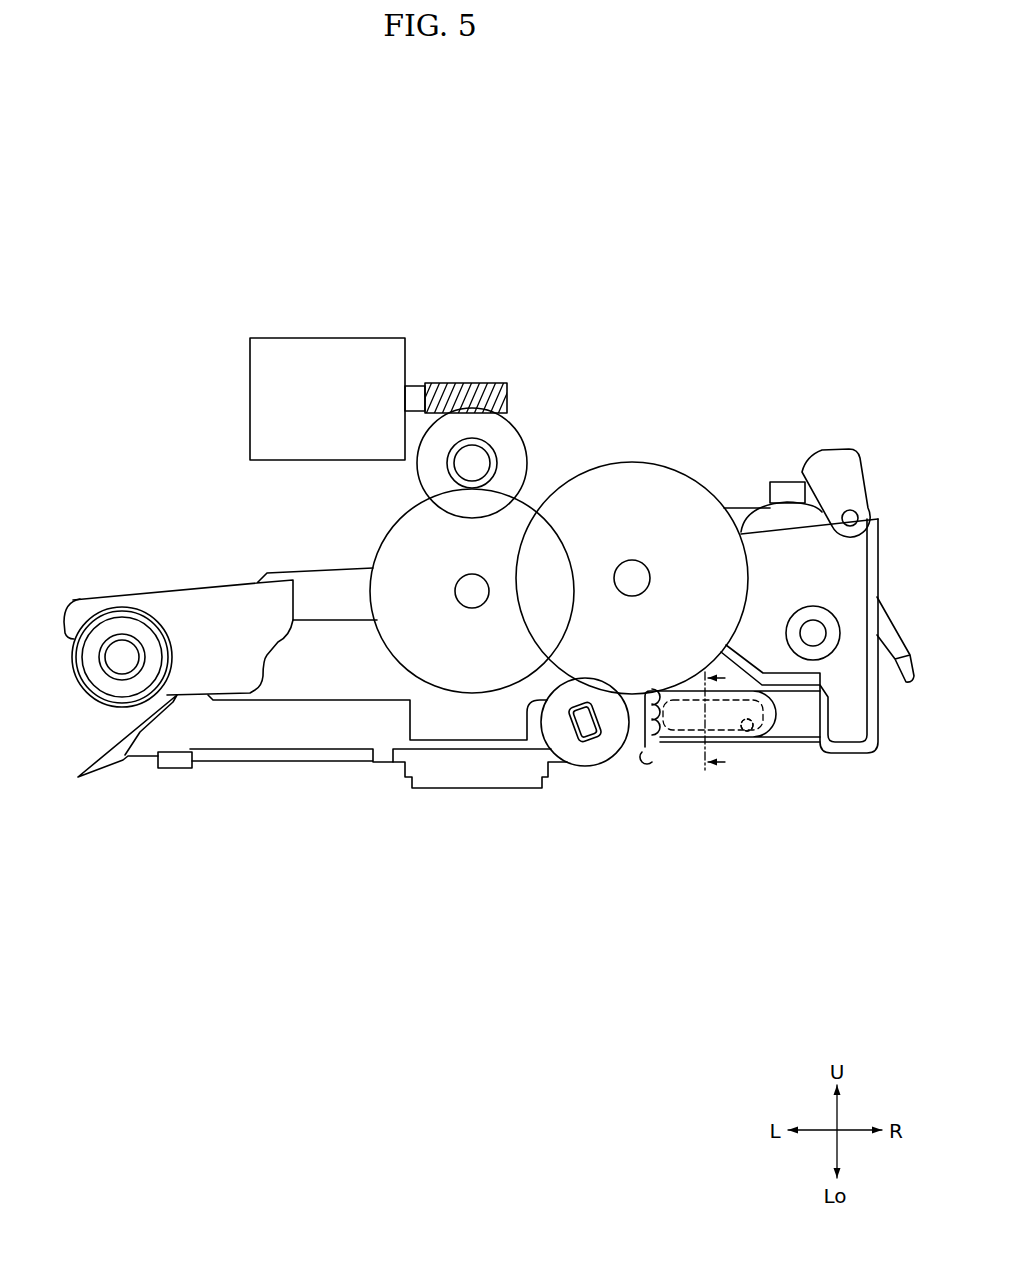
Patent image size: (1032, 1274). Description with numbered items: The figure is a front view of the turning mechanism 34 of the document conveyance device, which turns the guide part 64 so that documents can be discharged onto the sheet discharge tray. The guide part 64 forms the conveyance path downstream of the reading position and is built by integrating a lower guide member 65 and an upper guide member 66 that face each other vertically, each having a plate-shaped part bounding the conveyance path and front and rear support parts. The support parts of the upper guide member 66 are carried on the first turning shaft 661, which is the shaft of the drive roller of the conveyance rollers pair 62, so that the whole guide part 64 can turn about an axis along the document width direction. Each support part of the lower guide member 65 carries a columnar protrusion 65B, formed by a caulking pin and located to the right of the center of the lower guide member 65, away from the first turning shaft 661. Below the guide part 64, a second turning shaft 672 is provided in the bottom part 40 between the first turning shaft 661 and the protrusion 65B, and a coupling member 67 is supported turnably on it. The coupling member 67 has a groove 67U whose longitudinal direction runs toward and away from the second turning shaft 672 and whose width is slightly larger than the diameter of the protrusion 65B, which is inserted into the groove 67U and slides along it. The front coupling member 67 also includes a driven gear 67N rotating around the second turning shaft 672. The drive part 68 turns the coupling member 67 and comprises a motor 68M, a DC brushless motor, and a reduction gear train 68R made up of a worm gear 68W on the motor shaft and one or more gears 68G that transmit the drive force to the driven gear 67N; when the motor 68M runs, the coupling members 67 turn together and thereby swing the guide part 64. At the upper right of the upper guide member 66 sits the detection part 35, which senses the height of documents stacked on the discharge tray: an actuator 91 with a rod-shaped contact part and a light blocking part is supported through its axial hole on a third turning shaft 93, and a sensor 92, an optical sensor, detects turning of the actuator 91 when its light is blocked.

The turning mechanism 34 is at (800, 194).
The detection part 35 is at (848, 388).
The bottom part 40 is at (362, 763).
The conveyance rollers pair 62 is at (97, 698).
The guide part 64 is at (187, 582).
The lower guide member 65 is at (298, 682).
The protrusion 65B is at (663, 703).
The upper guide member 66 is at (225, 585).
The first turning shaft 661 is at (103, 667).
The coupling member 67 is at (782, 720).
The driven gear 67N is at (633, 750).
The groove 67U is at (748, 732).
The second turning shaft 672 is at (585, 748).
The drive part 68 is at (502, 276).
The motor 68M is at (353, 337).
The worm gear 68W is at (472, 383).
The reduction gear train 68R is at (552, 403).
The gears 68G is at (395, 523).
The actuator 91 is at (848, 447).
The sensor 92 is at (790, 480).
The third turning shaft 93 is at (866, 517).